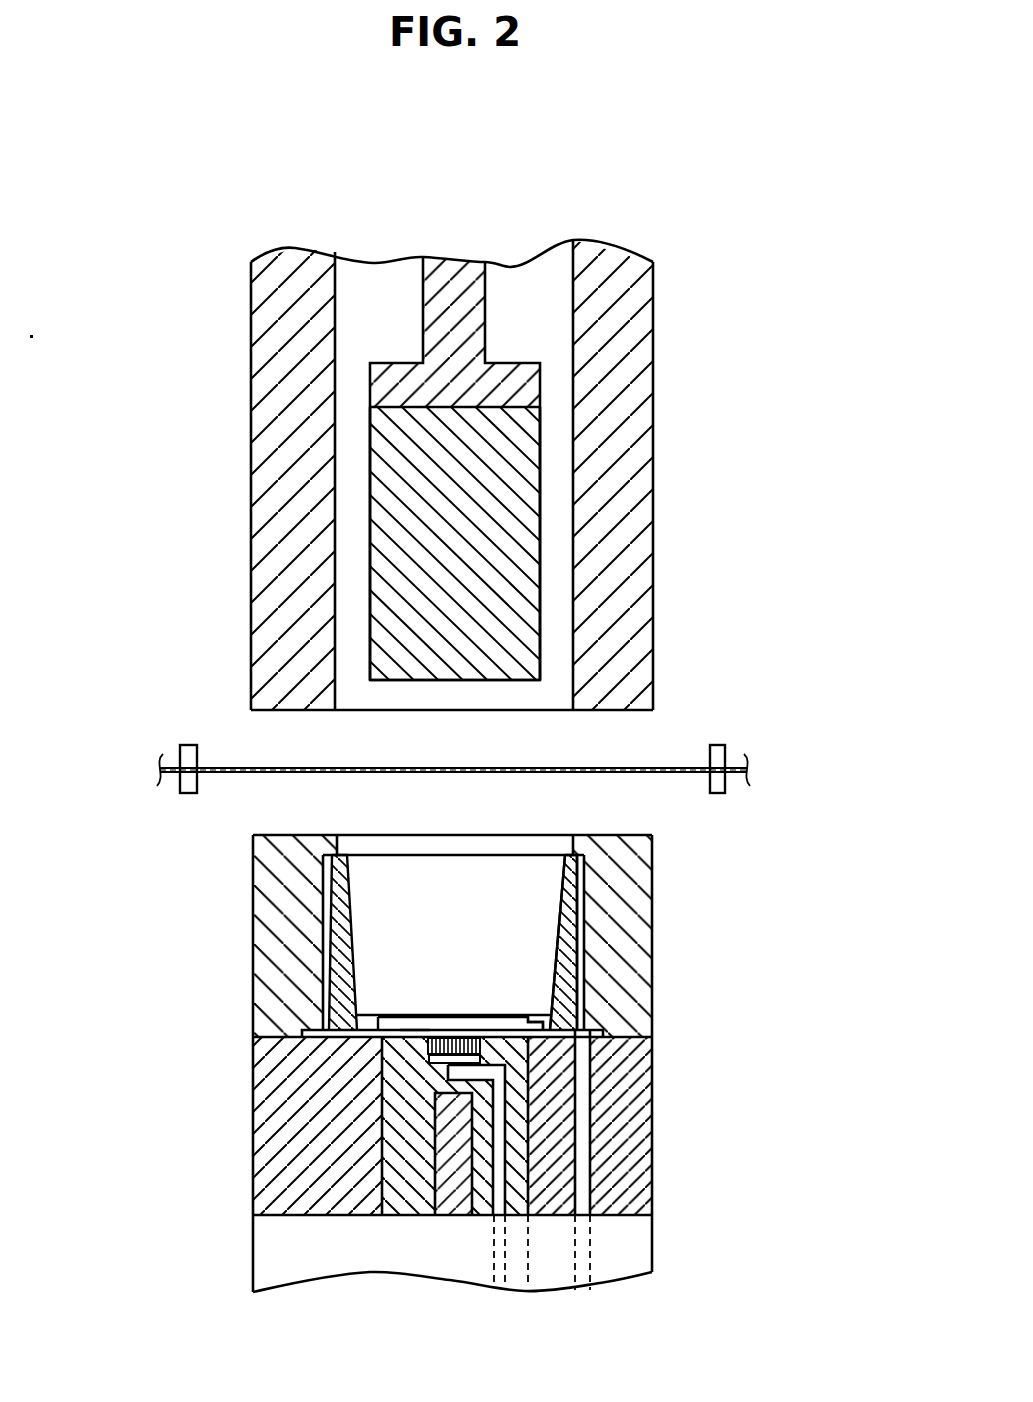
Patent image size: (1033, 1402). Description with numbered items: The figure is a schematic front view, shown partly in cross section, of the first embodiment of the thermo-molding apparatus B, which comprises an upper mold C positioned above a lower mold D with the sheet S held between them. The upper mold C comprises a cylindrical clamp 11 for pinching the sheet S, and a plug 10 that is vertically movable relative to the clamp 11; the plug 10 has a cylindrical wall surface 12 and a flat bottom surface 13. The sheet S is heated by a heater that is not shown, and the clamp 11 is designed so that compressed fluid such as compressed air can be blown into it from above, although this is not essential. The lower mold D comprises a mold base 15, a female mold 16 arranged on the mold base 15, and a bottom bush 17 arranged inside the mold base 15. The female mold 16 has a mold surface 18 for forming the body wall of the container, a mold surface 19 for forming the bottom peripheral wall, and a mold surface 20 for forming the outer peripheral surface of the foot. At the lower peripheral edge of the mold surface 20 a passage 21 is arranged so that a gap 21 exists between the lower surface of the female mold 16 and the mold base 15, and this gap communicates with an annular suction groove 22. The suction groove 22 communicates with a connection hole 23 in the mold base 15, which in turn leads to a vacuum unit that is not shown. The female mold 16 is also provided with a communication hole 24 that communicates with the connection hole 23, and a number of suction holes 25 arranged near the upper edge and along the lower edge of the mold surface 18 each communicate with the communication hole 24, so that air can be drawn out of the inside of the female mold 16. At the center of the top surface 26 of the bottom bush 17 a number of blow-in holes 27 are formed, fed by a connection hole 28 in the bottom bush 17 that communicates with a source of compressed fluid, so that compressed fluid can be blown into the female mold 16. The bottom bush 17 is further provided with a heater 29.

The plug 10 is at (540, 457).
The cylindrical clamp 11 is at (656, 334).
The cylindrical wall surface 12 is at (540, 566).
The flat bottom surface 13 is at (523, 685).
The mold base 15 is at (655, 1100).
The female mold 16 is at (655, 916).
The bottom bush 17 is at (530, 1147).
The mold surface 18 is at (560, 918).
The mold surface 19 is at (540, 1015).
The mold surface 20 is at (533, 1027).
The passage 21 is at (385, 1033).
The annular suction groove 22 is at (300, 1033).
The connection hole 23 is at (592, 1181).
The communication hole 24 is at (580, 963).
The suction holes 25 is at (580, 883).
The top surface 26 is at (413, 1025).
The blow-in holes 27 is at (427, 1048).
The connection hole 28 is at (508, 1165).
The heater 29 is at (465, 1130).
The thermo-molding apparatus B is at (467, 151).
The upper mold C is at (236, 445).
The lower mold D is at (236, 993).
The sheet S is at (235, 767).